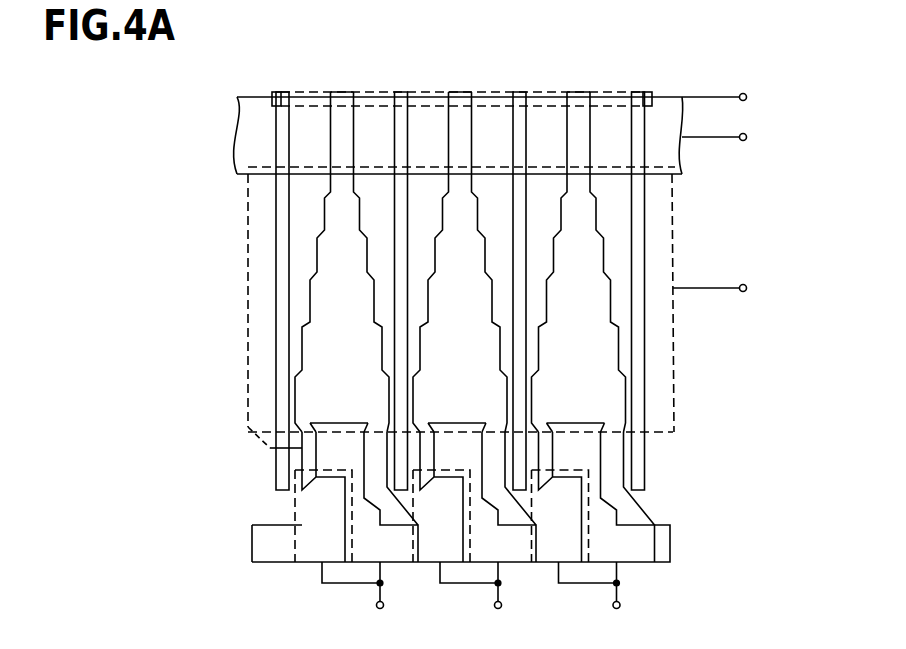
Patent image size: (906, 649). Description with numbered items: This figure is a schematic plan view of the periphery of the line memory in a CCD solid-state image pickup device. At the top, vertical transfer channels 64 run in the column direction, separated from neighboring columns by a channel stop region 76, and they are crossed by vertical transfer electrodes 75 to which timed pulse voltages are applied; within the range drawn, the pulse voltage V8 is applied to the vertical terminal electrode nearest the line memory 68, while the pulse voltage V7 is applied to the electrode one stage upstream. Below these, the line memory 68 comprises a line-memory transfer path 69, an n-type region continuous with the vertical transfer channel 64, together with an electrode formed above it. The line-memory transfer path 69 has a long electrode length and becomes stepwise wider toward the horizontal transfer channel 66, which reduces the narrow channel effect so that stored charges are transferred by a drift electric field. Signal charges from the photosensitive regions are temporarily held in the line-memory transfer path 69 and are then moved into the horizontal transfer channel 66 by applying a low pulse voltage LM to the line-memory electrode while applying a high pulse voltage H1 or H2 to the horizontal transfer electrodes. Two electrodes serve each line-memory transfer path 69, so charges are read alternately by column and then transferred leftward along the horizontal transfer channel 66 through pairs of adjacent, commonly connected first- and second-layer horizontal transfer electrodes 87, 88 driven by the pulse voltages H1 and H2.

The vertical transfer channel 64 is at (339, 92).
The horizontal transfer channel 66 is at (670, 543).
The line memory 68 is at (672, 240).
The line-memory transfer path 69 is at (328, 297).
The vertical transfer electrode 75 is at (270, 96).
The channel stop region 76 is at (281, 92).
The first-layer horizontal transfer electrode 87 is at (397, 562).
The second-layer horizontal transfer electrode 88 is at (310, 562).
The pulse voltage V7 is at (718, 98).
The pulse voltage V8 is at (733, 138).
The pulse voltage LM is at (728, 288).
The pulse voltage H1 is at (476, 603).
The pulse voltage H2 is at (475, 603).